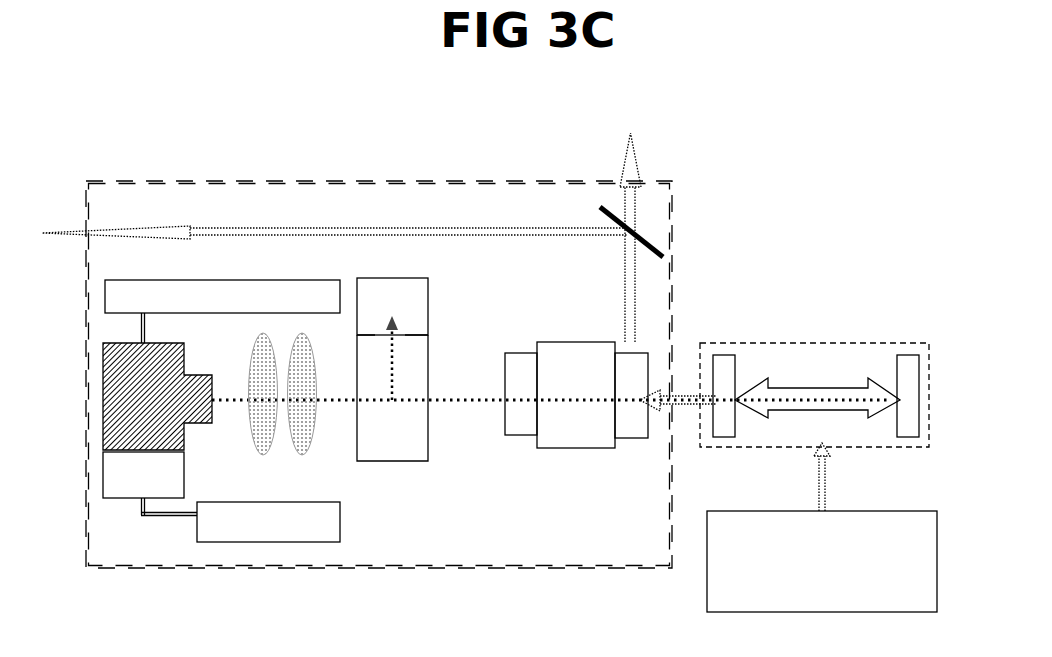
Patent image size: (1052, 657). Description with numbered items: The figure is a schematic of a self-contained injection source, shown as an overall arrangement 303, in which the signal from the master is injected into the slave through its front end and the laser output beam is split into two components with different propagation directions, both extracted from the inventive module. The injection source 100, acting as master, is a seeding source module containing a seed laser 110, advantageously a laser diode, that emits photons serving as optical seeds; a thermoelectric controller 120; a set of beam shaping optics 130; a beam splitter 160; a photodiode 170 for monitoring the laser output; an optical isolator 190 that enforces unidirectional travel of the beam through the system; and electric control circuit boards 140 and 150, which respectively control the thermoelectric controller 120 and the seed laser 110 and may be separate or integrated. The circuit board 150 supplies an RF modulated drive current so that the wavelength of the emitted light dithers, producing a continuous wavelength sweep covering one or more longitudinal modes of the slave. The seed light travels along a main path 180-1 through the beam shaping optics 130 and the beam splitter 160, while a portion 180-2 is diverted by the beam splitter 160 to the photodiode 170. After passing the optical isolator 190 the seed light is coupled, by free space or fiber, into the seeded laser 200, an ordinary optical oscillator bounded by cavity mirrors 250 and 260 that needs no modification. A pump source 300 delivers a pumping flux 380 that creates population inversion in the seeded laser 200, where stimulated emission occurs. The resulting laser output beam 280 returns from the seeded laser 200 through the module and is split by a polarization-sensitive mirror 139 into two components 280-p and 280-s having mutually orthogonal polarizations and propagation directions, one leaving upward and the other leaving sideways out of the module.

The injection source 100 is at (379, 374).
The seed laser 110 is at (157, 396).
The thermoelectric controller 120 is at (143, 483).
The beam shaping optics 130 is at (283, 413).
The polarization-sensitive mirror 139 is at (652, 232).
The electric control circuit board 140 is at (240, 522).
The electric control circuit board 150 is at (222, 311).
The beam splitter 160 is at (392, 398).
The photodiode 170 is at (392, 306).
The laser output 180-1 is at (551, 424).
The laser output 180-2 is at (436, 358).
The optical isolator 190 is at (576, 395).
The seeded laser 200 is at (814, 376).
The cavity mirror 250 is at (729, 416).
The cavity mirror 260 is at (919, 416).
The laser output beam 280 is at (678, 385).
The p-polarized component of laser output beam 280-p is at (677, 236).
The s-polarized component of laser output beam 280-s is at (335, 215).
The pump source 300 is at (822, 561).
The laser stabilization system 303 is at (495, 371).
The pumping flux 380 is at (852, 477).